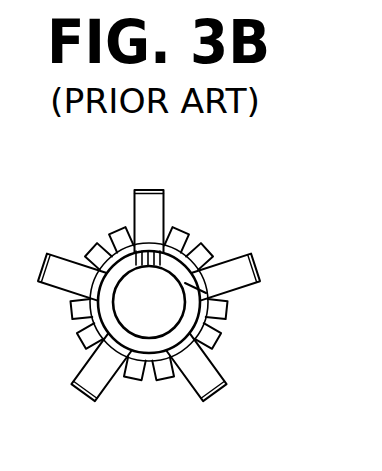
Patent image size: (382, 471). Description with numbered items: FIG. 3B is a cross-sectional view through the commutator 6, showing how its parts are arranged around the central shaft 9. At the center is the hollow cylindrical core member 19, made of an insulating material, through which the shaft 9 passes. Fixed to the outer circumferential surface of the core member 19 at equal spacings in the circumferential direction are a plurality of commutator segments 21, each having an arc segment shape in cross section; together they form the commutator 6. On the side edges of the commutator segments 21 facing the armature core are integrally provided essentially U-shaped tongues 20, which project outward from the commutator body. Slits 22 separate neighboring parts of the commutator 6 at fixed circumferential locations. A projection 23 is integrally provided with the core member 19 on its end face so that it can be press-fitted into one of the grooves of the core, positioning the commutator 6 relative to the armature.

The commutator 6 is at (207, 228).
The shaft 9 is at (141, 314).
The core member 19 is at (127, 262).
The tongue 20 is at (145, 212).
The commutator segment 21 is at (220, 342).
The slit 22 is at (185, 243).
The projection 23 is at (228, 295).